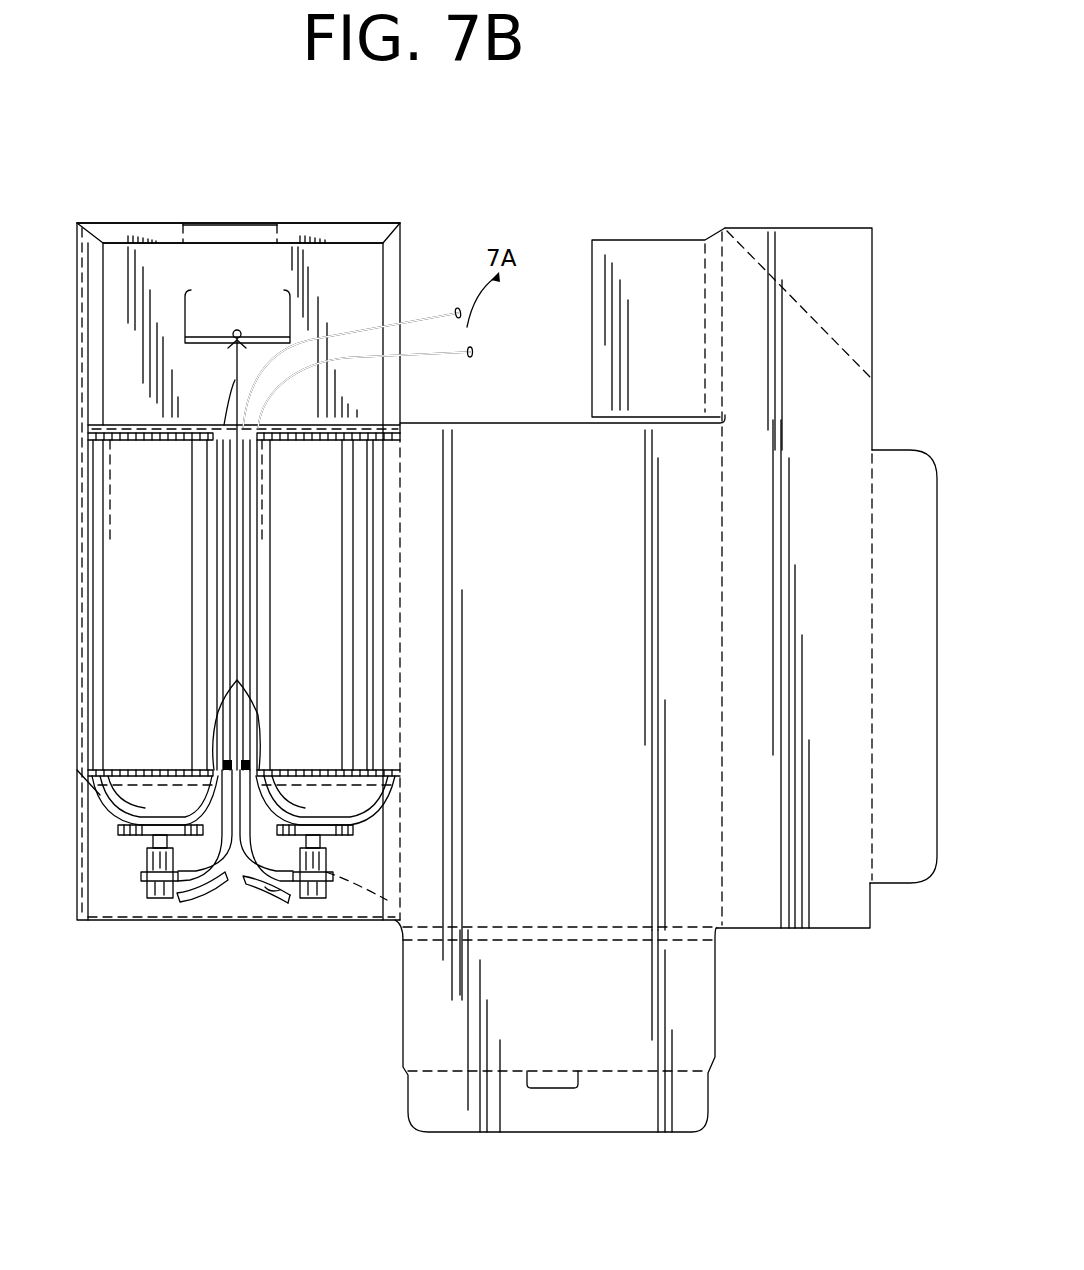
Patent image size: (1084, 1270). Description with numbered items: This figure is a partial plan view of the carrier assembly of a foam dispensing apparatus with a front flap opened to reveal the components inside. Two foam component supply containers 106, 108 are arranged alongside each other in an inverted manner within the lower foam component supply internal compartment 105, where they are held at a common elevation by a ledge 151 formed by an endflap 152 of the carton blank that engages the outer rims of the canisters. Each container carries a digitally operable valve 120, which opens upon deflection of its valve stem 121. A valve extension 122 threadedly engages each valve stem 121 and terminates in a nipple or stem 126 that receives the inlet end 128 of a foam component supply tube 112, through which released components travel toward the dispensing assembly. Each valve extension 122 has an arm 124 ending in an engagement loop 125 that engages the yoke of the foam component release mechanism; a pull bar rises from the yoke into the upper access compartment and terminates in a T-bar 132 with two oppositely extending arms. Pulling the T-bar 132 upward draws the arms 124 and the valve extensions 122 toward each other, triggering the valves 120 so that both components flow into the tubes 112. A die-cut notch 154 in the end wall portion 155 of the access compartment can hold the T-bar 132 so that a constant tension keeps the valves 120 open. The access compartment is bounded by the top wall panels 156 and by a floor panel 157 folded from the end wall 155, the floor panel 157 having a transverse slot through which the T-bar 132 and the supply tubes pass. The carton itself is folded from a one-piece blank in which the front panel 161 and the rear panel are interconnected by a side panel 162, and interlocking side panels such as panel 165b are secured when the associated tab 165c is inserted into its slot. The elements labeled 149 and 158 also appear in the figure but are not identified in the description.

The foam component supply internal compartment 105 is at (159, 642).
The foam component supply container 106 is at (163, 619).
The foam component supply container 108 is at (323, 619).
The foam component supply tube 112 is at (268, 898).
The digitally operable valve 120 is at (331, 851).
The valve stem 121 is at (387, 896).
The valve extension portion 122 is at (327, 857).
The arm 124 is at (262, 850).
The engagement loop 125 is at (247, 760).
The nipple 126 is at (287, 900).
The inlet end 128 is at (294, 906).
The T-bar section 132 is at (206, 336).
The top panel 149 is at (333, 242).
The ledge 151 is at (107, 768).
The endflap 152 is at (222, 898).
The die-cut notch 154 is at (296, 306).
The end wall portion 155 is at (352, 258).
The top wall panel 156 is at (116, 238).
The floor panel 157 is at (146, 420).
The hinge 158 is at (277, 222).
The front panel 161 is at (557, 619).
The side panel 162 is at (118, 860).
The interlocking side panel 165b is at (848, 619).
The tab 165c is at (922, 619).